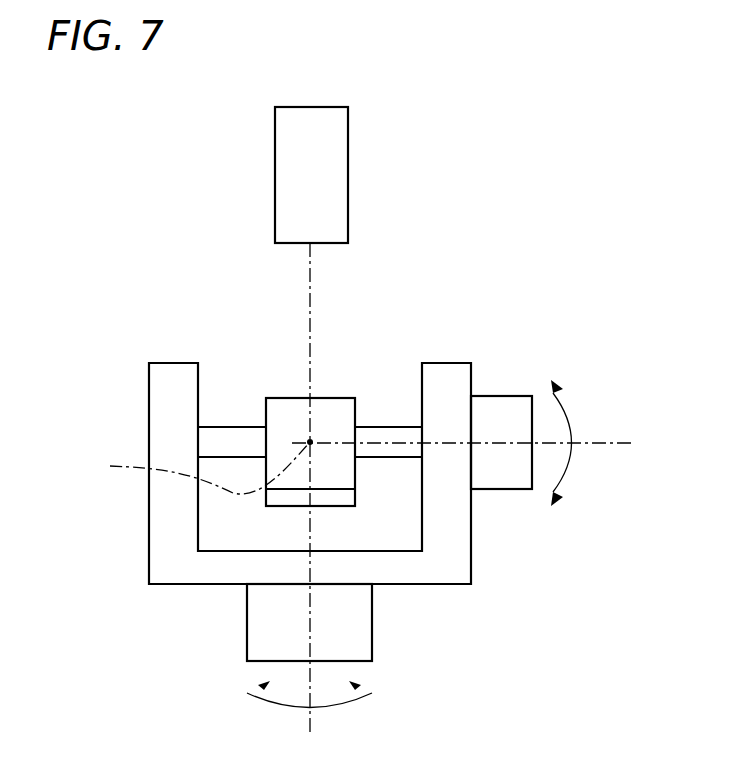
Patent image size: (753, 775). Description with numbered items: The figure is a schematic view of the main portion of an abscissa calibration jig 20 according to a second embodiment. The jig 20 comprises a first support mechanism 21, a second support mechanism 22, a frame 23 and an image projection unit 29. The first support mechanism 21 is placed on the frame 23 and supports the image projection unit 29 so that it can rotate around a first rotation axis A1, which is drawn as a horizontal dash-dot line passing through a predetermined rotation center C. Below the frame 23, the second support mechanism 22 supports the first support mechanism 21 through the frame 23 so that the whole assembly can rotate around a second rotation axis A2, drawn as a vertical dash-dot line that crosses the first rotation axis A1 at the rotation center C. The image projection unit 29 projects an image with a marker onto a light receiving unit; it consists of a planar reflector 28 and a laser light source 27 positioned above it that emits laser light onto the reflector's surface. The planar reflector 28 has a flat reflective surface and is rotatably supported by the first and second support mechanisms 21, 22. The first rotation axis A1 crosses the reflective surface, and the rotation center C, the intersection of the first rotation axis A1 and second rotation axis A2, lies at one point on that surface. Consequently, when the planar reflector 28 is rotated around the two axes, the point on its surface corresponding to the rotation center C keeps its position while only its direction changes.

The abscissa calibration jig 20 is at (166, 285).
The first support mechanism 21 is at (498, 396).
The second support mechanism 22 is at (372, 613).
The frame 23 is at (447, 363).
The laser light source 27 is at (348, 167).
The planar reflector 28 is at (340, 398).
The image projection unit 29 is at (443, 266).
The rotation center C is at (201, 468).
The first rotation axis A1 is at (477, 443).
The second rotation axis A2 is at (309, 505).